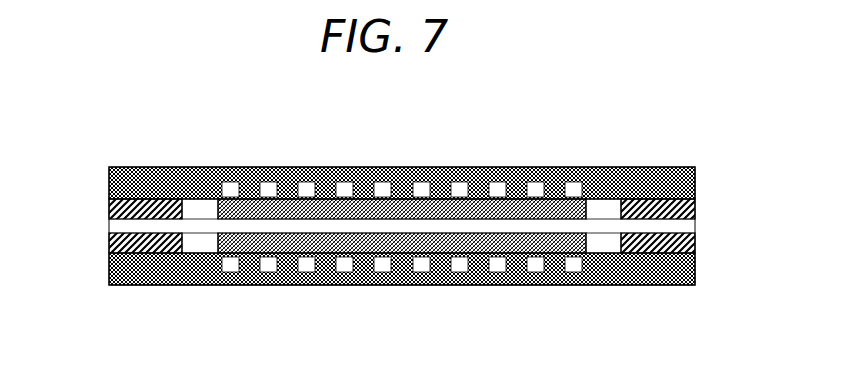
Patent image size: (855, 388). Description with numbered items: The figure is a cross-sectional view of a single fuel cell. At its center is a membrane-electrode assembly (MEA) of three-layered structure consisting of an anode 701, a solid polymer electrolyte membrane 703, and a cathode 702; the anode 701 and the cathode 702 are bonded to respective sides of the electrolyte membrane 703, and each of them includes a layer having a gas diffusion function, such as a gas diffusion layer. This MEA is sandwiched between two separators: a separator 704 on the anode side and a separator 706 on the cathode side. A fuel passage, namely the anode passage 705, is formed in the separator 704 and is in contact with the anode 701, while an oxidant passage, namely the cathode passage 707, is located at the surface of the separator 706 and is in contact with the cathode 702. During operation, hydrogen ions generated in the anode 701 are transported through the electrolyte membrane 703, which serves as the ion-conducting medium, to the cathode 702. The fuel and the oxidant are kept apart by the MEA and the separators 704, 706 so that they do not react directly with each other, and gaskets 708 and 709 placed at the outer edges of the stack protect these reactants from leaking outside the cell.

The anode 701 is at (371, 167).
The cathode 702 is at (360, 286).
The solid polymer electrolyte membrane 703 is at (214, 231).
The separator 704 is at (606, 167).
The anode passage 705 is at (466, 167).
The separator 706 is at (609, 286).
The cathode passage 707 is at (458, 268).
The gasket 708 is at (109, 210).
The gasket 709 is at (109, 243).